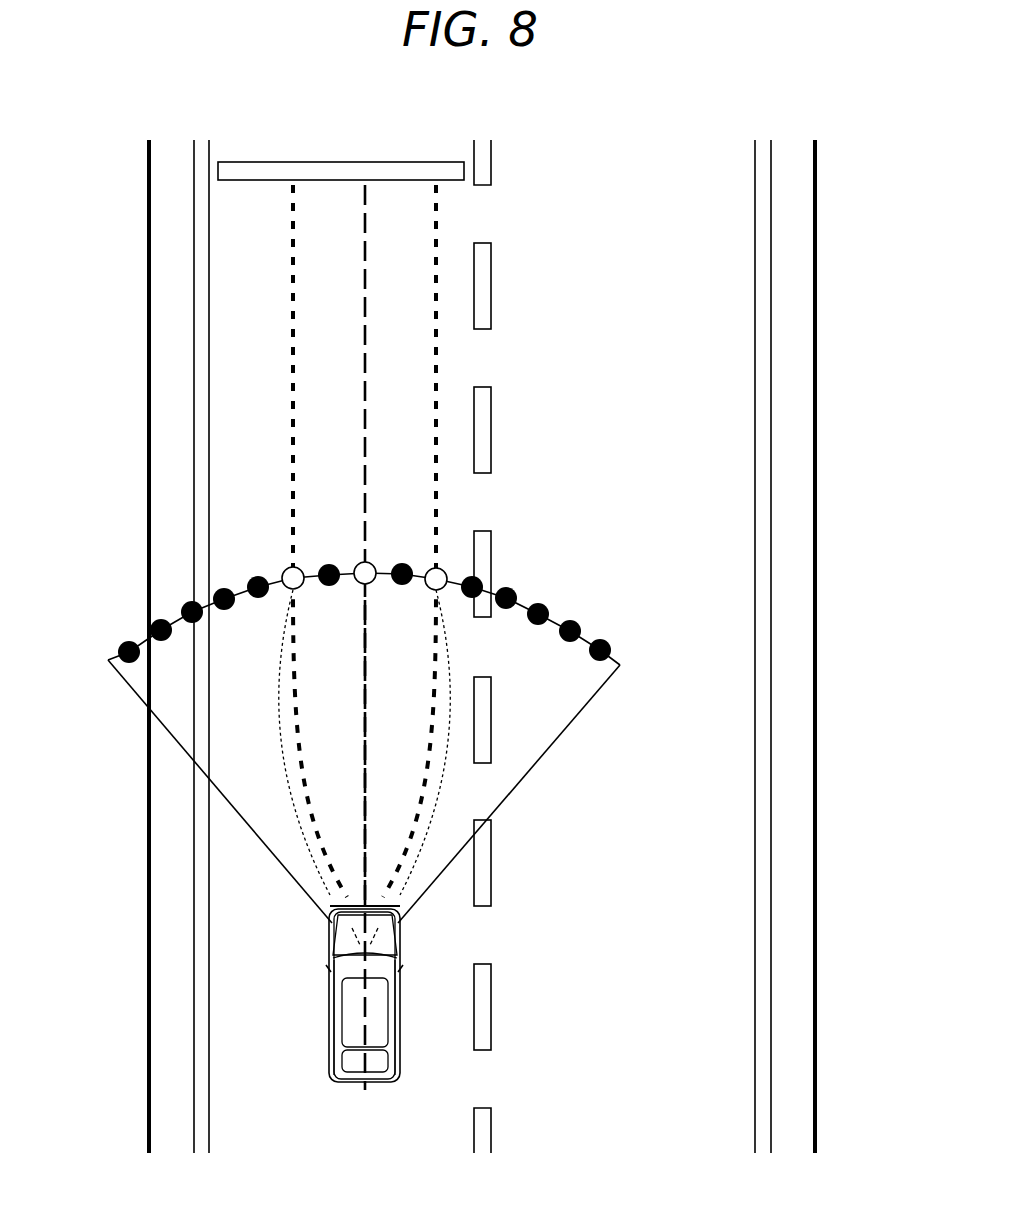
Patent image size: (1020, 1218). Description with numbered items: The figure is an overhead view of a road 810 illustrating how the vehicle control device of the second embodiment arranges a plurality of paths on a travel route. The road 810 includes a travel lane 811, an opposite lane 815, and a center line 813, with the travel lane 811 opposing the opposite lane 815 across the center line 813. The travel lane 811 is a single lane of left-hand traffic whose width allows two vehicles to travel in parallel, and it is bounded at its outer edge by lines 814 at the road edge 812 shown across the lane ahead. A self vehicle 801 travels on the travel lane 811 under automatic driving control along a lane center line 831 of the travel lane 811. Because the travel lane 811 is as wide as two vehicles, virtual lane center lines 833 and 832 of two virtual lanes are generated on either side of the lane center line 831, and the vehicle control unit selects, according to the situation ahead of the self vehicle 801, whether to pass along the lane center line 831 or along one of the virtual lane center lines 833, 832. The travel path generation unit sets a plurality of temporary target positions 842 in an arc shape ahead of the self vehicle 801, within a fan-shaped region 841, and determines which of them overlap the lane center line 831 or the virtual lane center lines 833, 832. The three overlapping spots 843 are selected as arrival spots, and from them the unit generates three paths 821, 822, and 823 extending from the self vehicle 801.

The self vehicle 801 is at (350, 1026).
The road 810 is at (147, 876).
The travel lane 811 is at (285, 1105).
The stop line 812 is at (251, 162).
The center line 813 is at (484, 286).
The left lane boundary lines 814 is at (200, 1027).
The opposite lane 815 is at (640, 339).
The path 821 is at (298, 810).
The path 822 is at (432, 810).
The path 823 is at (370, 788).
The lane center line 831 is at (368, 228).
The virtual lane center line 832 is at (438, 371).
The virtual lane center line 833 is at (291, 352).
The sensor detection range 841 is at (108, 658).
The temporary target positions 842 is at (572, 618).
The overlapping spots 843 is at (433, 566).